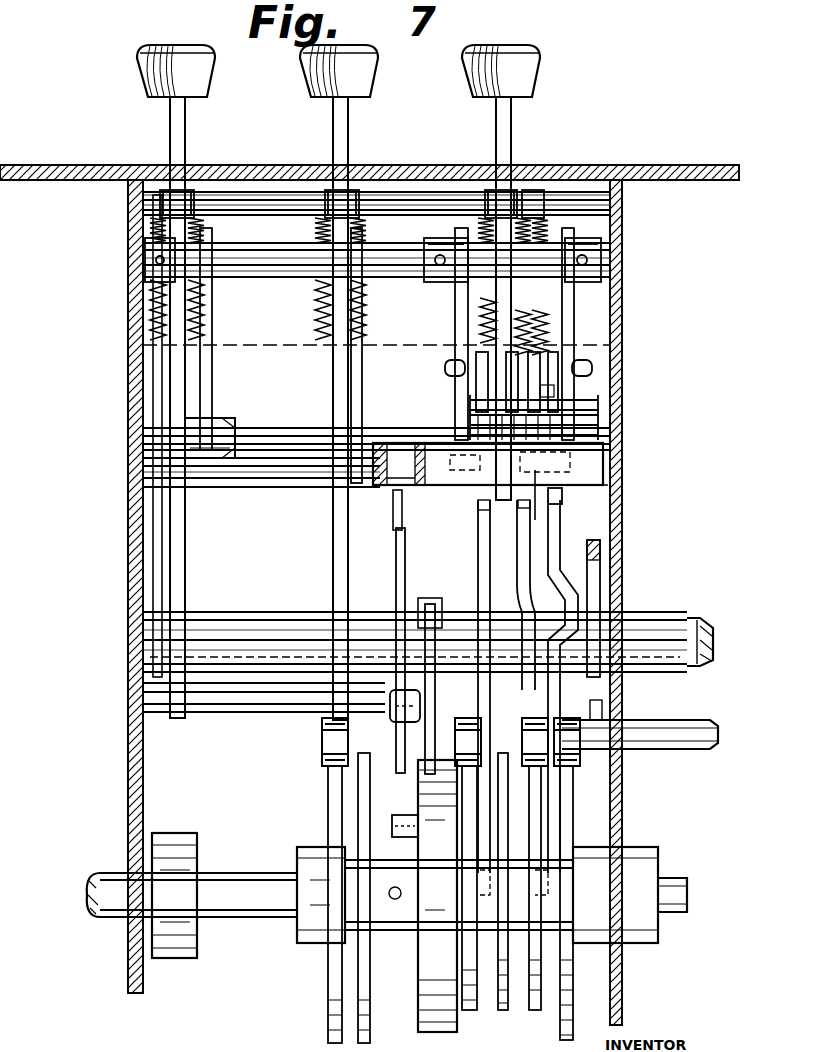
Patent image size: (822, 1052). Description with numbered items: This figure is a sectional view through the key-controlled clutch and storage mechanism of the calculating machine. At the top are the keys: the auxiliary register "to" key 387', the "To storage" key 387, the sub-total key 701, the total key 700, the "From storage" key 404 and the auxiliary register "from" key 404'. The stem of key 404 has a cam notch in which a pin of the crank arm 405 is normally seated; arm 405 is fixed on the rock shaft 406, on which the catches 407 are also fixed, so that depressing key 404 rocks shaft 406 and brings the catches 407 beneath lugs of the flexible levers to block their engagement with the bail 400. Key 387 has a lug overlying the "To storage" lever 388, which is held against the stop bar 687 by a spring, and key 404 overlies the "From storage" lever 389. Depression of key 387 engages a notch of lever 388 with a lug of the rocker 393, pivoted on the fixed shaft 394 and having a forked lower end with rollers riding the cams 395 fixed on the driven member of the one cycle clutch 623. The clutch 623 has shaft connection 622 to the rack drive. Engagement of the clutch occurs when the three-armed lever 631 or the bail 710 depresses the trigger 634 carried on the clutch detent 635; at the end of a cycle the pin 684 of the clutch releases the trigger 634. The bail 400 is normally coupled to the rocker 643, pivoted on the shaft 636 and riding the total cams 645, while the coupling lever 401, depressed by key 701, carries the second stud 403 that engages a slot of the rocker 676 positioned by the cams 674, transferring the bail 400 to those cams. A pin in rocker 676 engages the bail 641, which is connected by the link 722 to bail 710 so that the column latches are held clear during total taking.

The "to" key for the auxiliary register 387' is at (150, 79).
The "To storage" key 387 is at (311, 76).
The sub-total key 701 is at (466, 62).
The auxiliary register "from" key 404' is at (210, 406).
The "From storage" key 404 is at (374, 405).
The total key 700 is at (522, 82).
The crank arm 405 is at (210, 272).
The rock shaft 406 is at (272, 262).
The stop bar 687 is at (415, 345).
The catches 407 is at (575, 312).
The "From storage" lever 389 is at (360, 385).
The bail 400 is at (150, 540).
The "To storage" lever 388 is at (325, 412).
The bail 710 is at (392, 497).
The three-armed lever 631 is at (436, 475).
The second stud 403 is at (538, 495).
The rocker 393 is at (340, 585).
The trigger 634 is at (395, 590).
The clutch detent 635 is at (428, 600).
The rocker 676 is at (542, 585).
The link 722 is at (596, 575).
The shaft 636 is at (702, 620).
The coupling lever 401 is at (520, 570).
The rocker 643 is at (488, 680).
The bail 641 is at (665, 745).
The fixed shaft 394 is at (386, 722).
The pin 684 is at (394, 826).
The shaft connection 622 is at (112, 875).
The cams 395 is at (358, 998).
The one cycle clutch 623 is at (425, 975).
The total cams 645 is at (503, 1012).
The cams 674 is at (572, 945).